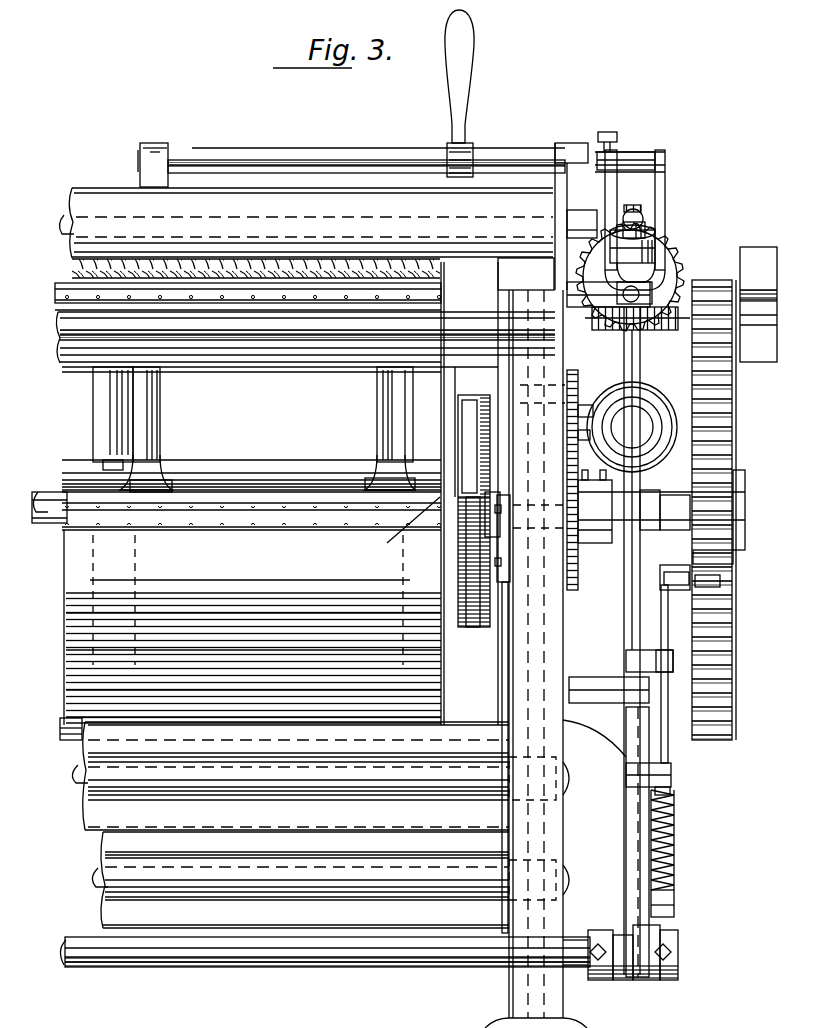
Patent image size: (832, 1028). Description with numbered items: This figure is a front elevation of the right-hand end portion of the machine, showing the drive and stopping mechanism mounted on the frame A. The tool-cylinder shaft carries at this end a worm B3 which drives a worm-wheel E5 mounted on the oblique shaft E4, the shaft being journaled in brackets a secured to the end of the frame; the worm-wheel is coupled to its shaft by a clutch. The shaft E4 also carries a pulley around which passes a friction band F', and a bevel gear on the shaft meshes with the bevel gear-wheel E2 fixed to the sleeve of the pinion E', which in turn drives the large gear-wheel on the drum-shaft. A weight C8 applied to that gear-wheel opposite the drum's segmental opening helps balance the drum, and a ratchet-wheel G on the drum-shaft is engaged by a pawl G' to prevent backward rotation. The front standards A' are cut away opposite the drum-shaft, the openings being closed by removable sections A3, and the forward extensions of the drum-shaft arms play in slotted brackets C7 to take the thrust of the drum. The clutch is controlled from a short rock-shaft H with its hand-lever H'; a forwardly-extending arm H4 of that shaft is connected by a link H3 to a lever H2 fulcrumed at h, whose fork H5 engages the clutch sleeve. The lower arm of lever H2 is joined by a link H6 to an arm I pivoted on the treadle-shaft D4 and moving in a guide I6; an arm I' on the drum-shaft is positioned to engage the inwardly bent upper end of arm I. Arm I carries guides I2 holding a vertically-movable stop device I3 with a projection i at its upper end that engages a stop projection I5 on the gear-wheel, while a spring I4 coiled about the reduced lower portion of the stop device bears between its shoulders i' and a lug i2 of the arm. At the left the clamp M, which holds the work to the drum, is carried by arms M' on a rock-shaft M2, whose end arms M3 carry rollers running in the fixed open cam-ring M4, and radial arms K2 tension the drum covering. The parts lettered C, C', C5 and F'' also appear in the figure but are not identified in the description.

The hand-lever H' is at (479, 93).
The rock-shaft H is at (401, 153).
The frame A is at (306, 223).
The clamp M is at (287, 337).
The radial arms K2 is at (110, 408).
The clamp arms M' is at (267, 429).
The rock-shaft M2 is at (270, 476).
The end bracket C' is at (47, 528).
The bed C is at (251, 608).
The connecting bar C5 is at (495, 848).
The treadle-shaft D4 is at (366, 970).
The front standards A' is at (542, 585).
The removable sections A3 is at (539, 654).
The forwardly-extending arm H4 is at (612, 150).
The link H3 is at (635, 155).
The fork H5 is at (665, 215).
The worm B3 is at (634, 206).
The worm-wheel E5 is at (666, 262).
The fulcrum h is at (647, 288).
The brackets a is at (600, 345).
The oblique shaft E4 is at (640, 352).
The lever H2 is at (629, 418).
The weight C8 is at (762, 262).
The pinion E' is at (735, 510).
The friction band F' is at (685, 427).
The pulley hub F'' is at (708, 427).
The pawl G' is at (534, 466).
The ratchet-wheel G is at (533, 511).
The cam-ring M4 is at (478, 612).
The slotted brackets C7 is at (500, 510).
The arms M3 is at (399, 527).
The arm I' is at (678, 510).
The bevel gear-wheel E2 is at (735, 562).
The stop projection I5 is at (690, 575).
The projection i is at (675, 667).
The link H6 is at (705, 587).
The arm I is at (621, 672).
The guides I2 is at (660, 655).
The stop device I3 is at (649, 712).
The guide I6 is at (600, 742).
The shoulders i' is at (681, 799).
The spring I4 is at (674, 845).
The lug i2 is at (674, 905).